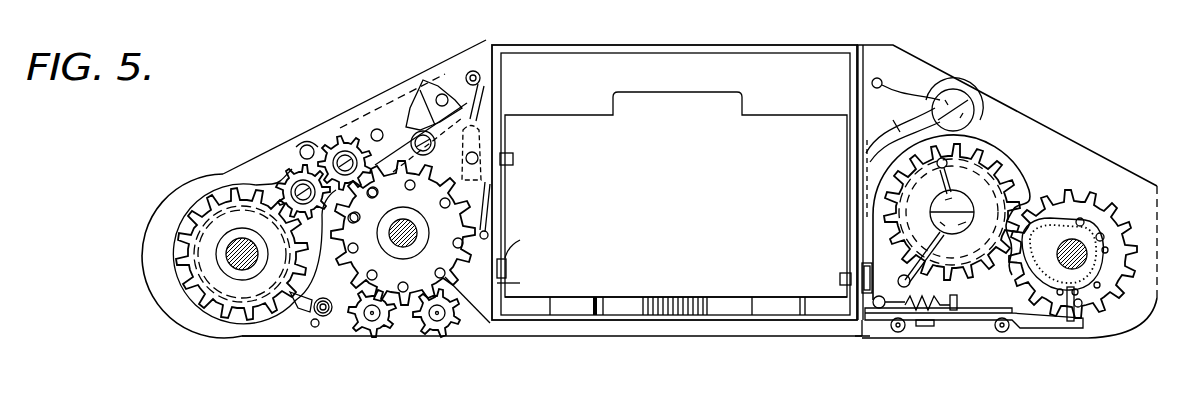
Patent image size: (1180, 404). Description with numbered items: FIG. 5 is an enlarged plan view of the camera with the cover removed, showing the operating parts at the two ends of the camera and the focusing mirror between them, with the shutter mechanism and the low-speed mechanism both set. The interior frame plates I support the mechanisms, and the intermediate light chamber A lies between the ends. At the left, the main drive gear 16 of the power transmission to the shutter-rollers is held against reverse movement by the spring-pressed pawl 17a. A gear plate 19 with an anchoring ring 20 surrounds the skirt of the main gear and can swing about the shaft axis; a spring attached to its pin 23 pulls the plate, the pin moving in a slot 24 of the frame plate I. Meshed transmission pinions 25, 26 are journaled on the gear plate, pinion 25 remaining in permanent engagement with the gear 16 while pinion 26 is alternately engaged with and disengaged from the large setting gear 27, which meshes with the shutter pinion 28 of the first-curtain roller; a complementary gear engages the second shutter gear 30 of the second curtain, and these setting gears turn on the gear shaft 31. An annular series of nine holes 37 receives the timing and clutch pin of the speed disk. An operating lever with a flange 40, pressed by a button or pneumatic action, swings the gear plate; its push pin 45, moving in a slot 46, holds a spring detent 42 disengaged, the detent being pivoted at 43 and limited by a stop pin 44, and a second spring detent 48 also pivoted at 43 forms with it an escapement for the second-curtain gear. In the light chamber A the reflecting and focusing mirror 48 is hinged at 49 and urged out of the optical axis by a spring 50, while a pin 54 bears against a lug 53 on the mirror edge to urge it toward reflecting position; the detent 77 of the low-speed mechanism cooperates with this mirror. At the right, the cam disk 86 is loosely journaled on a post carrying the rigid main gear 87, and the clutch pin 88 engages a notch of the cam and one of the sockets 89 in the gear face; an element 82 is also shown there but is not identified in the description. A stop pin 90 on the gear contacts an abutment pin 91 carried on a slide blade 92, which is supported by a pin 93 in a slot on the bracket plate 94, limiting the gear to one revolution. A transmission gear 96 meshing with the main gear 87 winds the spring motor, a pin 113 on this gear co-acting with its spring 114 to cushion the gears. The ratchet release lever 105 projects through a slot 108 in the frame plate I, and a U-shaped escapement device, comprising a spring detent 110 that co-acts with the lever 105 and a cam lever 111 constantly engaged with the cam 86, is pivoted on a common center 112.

The main drive gear 16 is at (176, 276).
The spring pressed pawl 17a is at (307, 317).
The gear plate 19 is at (236, 185).
The anchoring ring 20 is at (210, 313).
The pin 23 is at (311, 145).
The slot 24 is at (302, 144).
The transmission pinion 25 is at (296, 176).
The transmission pinion 26 is at (348, 135).
The large setting gear 27 is at (413, 298).
The shutter pinion 28 is at (452, 296).
The second shutter gear 30 is at (377, 336).
The gear shaft 31 is at (418, 244).
The holes 37 is at (490, 323).
The flange 40 is at (440, 362).
The spring detent 42 is at (490, 197).
The pivot 43 is at (418, 138).
The stop pin 44 is at (479, 158).
The push pin 45 is at (442, 93).
The slot 46 is at (470, 128).
The reflecting and focusing mirror 48 is at (702, 88).
The mirror hinge 49 is at (823, 310).
The mirror spring 50 is at (668, 297).
The lug 53 is at (525, 247).
The pin 54 is at (512, 278).
The detent 77 is at (838, 277).
The ratchet gear 82 is at (1078, 243).
The cam disk 86 is at (1092, 220).
The main gear 87 is at (1108, 298).
The clutch pin 88 is at (1098, 292).
The sockets 89 is at (1080, 218).
The stop pin 90 is at (1080, 308).
The abutment pin 91 is at (1073, 322).
The slide blade 92 is at (1042, 328).
The pin 93 is at (922, 330).
The bracket plate 94 is at (960, 322).
The transmission gear 96 is at (982, 145).
The ratchet release lever 105 is at (862, 322).
The slot 108 is at (860, 181).
The spring detent 110 is at (858, 208).
The cam lever 111 is at (1025, 192).
The common center 112 is at (957, 105).
The pin 113 is at (947, 167).
The spring 114 is at (952, 215).
The light chamber A is at (557, 83).
The frame plates I is at (1017, 113).